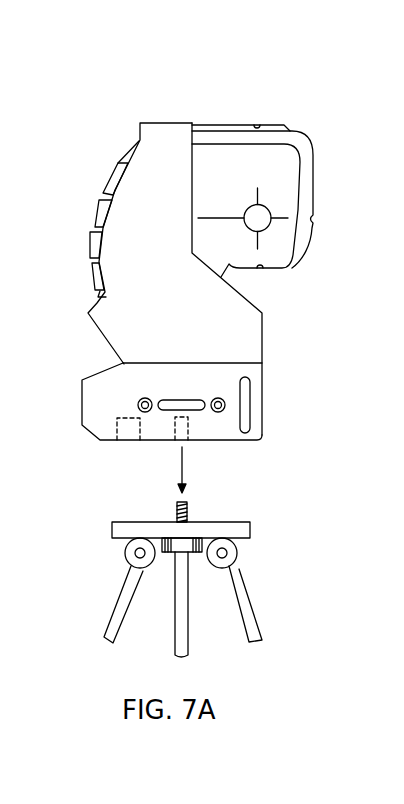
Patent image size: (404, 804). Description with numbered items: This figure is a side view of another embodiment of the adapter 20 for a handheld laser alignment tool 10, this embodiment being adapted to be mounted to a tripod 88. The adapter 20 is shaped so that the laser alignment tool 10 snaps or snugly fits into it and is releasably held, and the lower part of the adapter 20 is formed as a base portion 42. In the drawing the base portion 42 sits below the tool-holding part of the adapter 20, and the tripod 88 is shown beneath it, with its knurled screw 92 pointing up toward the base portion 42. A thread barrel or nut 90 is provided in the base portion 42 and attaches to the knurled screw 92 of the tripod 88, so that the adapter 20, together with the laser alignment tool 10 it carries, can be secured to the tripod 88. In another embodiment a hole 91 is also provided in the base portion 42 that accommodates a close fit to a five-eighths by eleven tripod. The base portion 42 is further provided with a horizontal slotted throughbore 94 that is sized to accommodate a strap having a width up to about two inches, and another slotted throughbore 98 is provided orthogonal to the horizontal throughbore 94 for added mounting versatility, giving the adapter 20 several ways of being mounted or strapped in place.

The laser alignment tool 10 is at (227, 124).
The adapter 20 is at (160, 122).
The base portion 42 is at (80, 363).
The tripod 88 is at (122, 594).
The thread barrel or nut 90 is at (176, 436).
The hole 91 is at (118, 437).
The knurled screw 92 is at (189, 512).
The horizontal slotted throughbore 94 is at (187, 400).
The slotted throughbore 98 is at (247, 395).